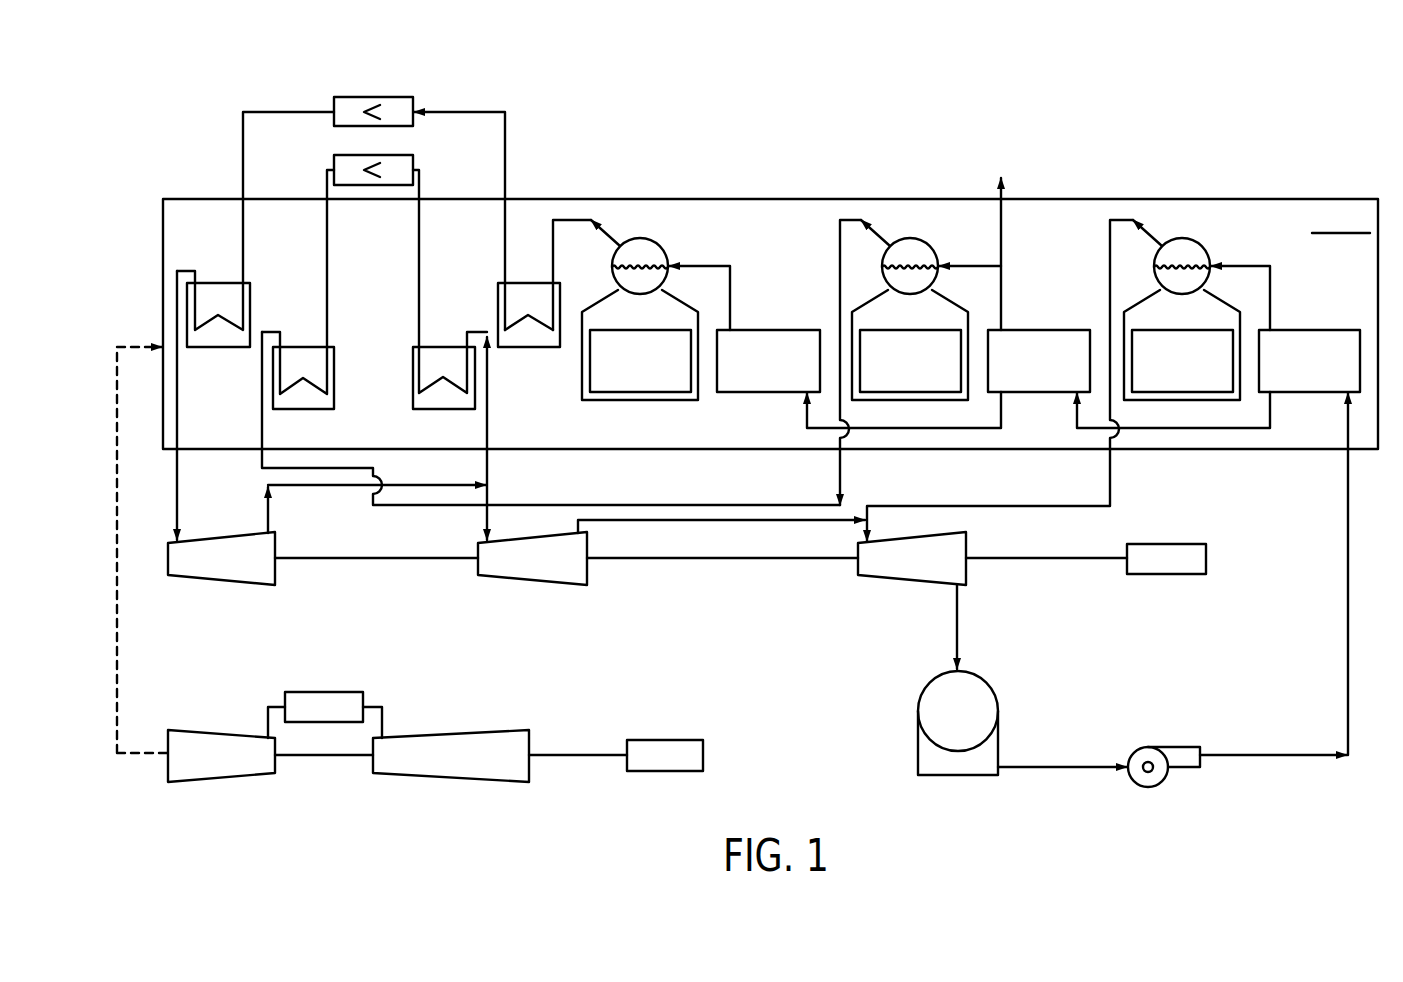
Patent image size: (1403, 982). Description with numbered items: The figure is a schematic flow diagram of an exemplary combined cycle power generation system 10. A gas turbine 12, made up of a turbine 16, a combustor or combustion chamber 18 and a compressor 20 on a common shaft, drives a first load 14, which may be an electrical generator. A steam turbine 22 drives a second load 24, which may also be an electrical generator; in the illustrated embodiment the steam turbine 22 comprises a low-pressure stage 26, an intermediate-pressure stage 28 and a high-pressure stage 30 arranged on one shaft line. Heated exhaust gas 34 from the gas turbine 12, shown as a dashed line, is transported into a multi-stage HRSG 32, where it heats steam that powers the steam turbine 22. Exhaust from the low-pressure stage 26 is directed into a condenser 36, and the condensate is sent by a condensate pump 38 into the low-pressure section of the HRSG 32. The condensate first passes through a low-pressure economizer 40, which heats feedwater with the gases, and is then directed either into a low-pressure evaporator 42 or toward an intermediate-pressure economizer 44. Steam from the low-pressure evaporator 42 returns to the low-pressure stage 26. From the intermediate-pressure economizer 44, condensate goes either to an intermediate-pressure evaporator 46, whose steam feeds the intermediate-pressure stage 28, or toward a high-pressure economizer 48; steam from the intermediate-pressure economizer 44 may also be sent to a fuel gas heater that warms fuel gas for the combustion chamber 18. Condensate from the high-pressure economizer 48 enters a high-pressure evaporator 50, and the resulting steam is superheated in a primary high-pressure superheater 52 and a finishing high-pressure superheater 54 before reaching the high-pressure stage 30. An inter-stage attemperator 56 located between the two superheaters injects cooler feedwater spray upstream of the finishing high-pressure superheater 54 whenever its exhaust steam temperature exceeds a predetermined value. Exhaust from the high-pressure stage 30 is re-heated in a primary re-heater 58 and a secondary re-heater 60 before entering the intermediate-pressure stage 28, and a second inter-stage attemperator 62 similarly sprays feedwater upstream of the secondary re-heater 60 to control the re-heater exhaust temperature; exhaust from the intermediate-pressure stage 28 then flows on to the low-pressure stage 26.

The combined cycle power generation system 10 is at (1326, 176).
The gas turbine 12 is at (239, 819).
The first load 14 is at (666, 740).
The turbine 16 is at (221, 732).
The combustor 18 is at (322, 692).
The compressor 20 is at (451, 732).
The steam turbine 22 is at (611, 604).
The second load 24 is at (1168, 543).
The low-pressure stage 26 is at (910, 585).
The intermediate-pressure stage 28 is at (532, 583).
The high-pressure stage 30 is at (218, 582).
The HRSG 32 is at (771, 199).
The heated exhaust gas 34 is at (119, 631).
The condenser 36 is at (917, 742).
The condensate pump 38 is at (1160, 782).
The low-pressure economizer 40 is at (1308, 330).
The low-pressure evaporator 42 is at (1222, 293).
The intermediate-pressure economizer 44 is at (1038, 330).
The intermediate-pressure evaporator 46 is at (950, 293).
The high-pressure economizer 48 is at (768, 330).
The high-pressure evaporator 50 is at (680, 293).
The primary high-pressure superheater 52 is at (527, 347).
The finishing high-pressure superheater 54 is at (215, 347).
The inter-stage attemperator 56 is at (417, 121).
The primary re-heater 58 is at (413, 375).
The secondary re-heater 60 is at (334, 378).
The inter-stage attemperator 62 is at (334, 156).